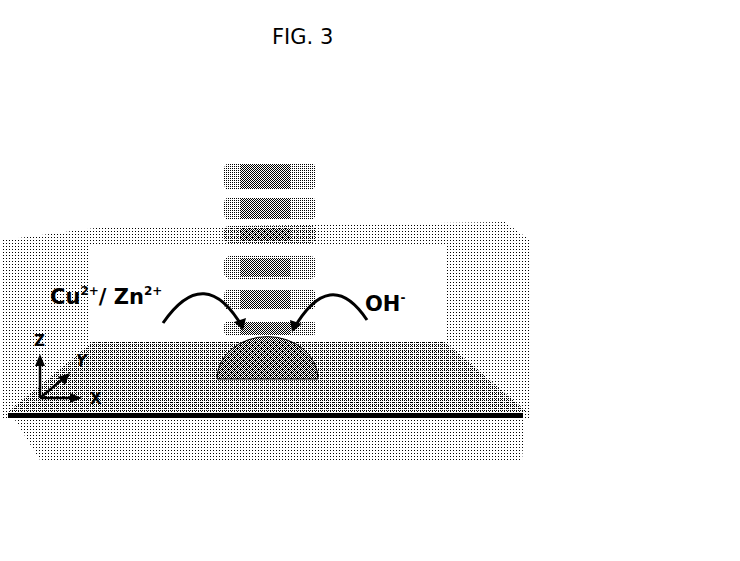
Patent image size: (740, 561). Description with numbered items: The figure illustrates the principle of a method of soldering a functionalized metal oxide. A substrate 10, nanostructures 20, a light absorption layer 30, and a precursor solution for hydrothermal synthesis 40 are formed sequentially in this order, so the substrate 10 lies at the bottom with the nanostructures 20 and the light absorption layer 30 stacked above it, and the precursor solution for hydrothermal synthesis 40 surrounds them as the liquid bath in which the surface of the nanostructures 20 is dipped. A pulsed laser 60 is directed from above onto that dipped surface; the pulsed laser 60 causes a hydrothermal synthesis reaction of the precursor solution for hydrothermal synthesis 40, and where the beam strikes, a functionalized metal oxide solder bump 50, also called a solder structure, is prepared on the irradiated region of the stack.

The substrate 10 is at (495, 423).
The nanostructure 20 is at (515, 413).
The light absorption layer 30 is at (462, 378).
The precursor solution for hydrothermal synthesis 40 is at (483, 278).
The functionalized metal oxide solder structure (solder bump) 50 is at (265, 372).
The pulsed laser 60 is at (268, 172).